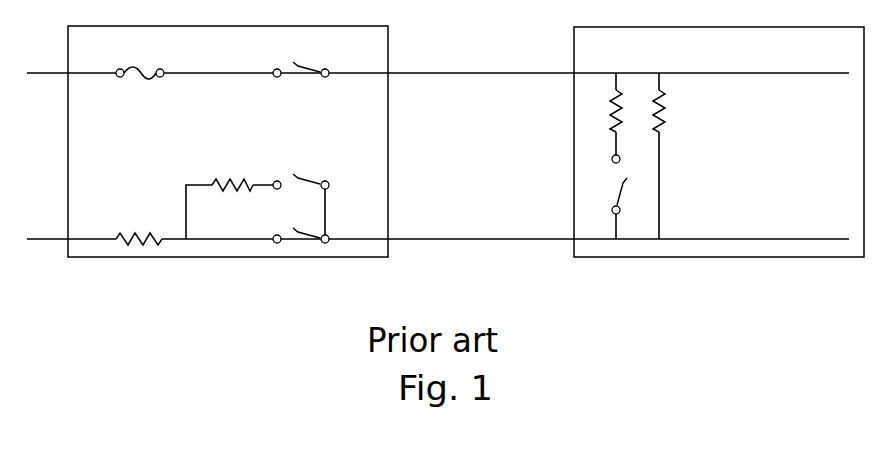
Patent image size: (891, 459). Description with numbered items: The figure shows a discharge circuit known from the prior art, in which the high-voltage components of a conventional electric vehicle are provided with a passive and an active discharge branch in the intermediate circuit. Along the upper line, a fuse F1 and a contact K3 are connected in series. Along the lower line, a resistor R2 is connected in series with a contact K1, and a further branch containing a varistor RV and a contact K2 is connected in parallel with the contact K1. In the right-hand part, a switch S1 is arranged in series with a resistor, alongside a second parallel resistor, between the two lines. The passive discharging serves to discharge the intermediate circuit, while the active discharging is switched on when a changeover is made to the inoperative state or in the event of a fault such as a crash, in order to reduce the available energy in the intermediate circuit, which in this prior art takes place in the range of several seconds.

The fuse F1 is at (140, 61).
The switch contact K3 is at (301, 83).
The resistor R2 is at (139, 223).
The varistor RV is at (232, 174).
The switch contact K2 is at (301, 196).
The switch contact K1 is at (301, 246).
The switch S1 is at (606, 197).